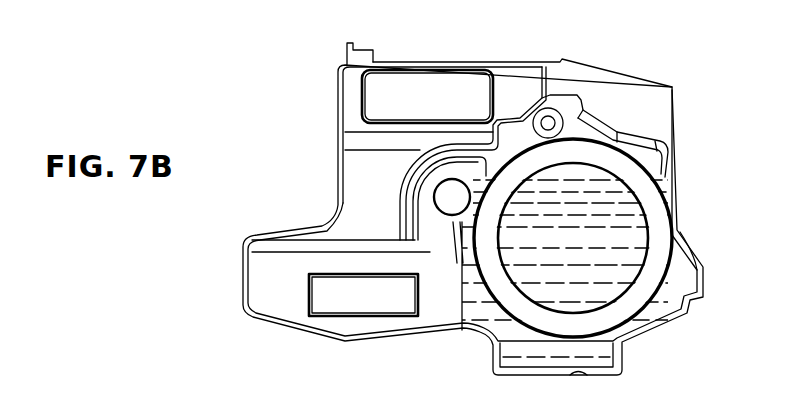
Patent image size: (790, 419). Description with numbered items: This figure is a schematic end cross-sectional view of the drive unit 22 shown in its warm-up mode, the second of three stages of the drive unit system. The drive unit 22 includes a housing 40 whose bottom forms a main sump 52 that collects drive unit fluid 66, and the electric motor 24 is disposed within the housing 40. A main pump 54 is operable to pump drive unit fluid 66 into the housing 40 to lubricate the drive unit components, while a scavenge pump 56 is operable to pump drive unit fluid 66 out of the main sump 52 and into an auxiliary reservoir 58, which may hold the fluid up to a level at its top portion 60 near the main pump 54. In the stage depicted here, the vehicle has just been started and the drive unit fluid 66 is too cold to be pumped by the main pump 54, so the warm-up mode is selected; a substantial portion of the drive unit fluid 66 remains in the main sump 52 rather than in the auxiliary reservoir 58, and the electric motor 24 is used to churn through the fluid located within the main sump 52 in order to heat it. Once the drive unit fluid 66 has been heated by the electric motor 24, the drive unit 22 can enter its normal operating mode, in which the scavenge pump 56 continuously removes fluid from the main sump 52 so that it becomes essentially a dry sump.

The drive unit 22 is at (642, 53).
The electric motor 24 is at (637, 290).
The housing 40 is at (655, 118).
The main sump 52 is at (577, 347).
The main pump 54 is at (427, 85).
The scavenge pump 56 is at (365, 303).
The auxiliary reservoir 58 is at (285, 303).
The top portion 60 is at (350, 82).
The drive unit fluid 66 is at (618, 225).